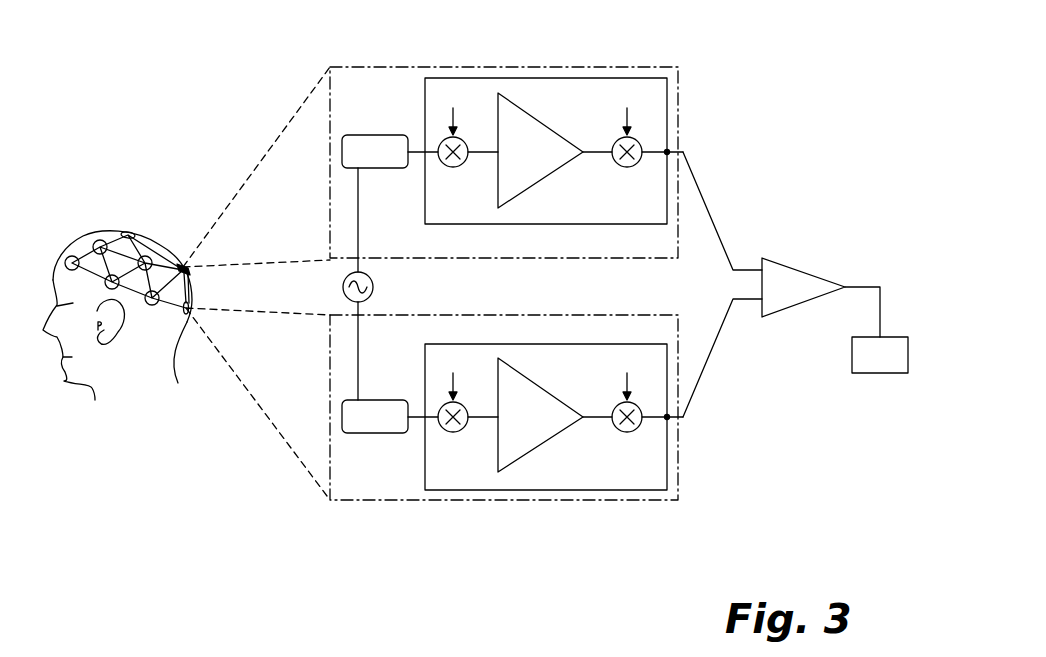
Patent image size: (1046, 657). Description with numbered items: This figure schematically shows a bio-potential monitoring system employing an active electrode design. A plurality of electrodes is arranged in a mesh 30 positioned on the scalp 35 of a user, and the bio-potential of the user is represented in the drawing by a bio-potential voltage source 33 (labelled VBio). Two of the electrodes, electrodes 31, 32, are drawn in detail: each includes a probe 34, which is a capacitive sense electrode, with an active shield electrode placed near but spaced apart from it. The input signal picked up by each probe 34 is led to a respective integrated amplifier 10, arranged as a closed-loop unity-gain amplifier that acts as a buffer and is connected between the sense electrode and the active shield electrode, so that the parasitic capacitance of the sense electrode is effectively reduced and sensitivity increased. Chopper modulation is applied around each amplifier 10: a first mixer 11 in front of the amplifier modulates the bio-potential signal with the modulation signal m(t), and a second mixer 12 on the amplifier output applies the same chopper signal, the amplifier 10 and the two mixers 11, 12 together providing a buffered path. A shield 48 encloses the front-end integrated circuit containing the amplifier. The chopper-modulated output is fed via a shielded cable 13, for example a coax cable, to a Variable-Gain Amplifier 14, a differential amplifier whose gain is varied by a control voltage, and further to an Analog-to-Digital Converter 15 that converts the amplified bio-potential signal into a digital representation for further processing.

The integrated amplifier 10 is at (568, 142).
The first mixer 11 is at (440, 141).
The second mixer 12 is at (640, 140).
The shielded cable 13 is at (727, 248).
The Variable-Gain Amplifier 14 is at (820, 273).
The Analog-to-Digital Converter 15 is at (908, 348).
The mesh 30 is at (110, 233).
The electrode 31 is at (180, 262).
The electrode 32 is at (187, 317).
The biopotential voltage source 33 is at (373, 282).
The probe 34 is at (395, 133).
The scalp 35 is at (123, 377).
The shield 48 is at (683, 152).